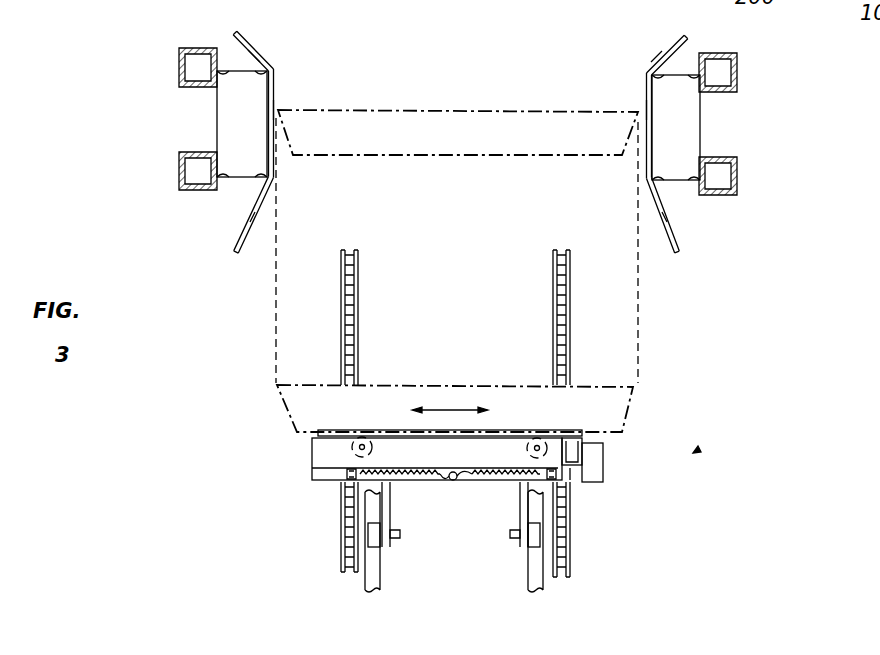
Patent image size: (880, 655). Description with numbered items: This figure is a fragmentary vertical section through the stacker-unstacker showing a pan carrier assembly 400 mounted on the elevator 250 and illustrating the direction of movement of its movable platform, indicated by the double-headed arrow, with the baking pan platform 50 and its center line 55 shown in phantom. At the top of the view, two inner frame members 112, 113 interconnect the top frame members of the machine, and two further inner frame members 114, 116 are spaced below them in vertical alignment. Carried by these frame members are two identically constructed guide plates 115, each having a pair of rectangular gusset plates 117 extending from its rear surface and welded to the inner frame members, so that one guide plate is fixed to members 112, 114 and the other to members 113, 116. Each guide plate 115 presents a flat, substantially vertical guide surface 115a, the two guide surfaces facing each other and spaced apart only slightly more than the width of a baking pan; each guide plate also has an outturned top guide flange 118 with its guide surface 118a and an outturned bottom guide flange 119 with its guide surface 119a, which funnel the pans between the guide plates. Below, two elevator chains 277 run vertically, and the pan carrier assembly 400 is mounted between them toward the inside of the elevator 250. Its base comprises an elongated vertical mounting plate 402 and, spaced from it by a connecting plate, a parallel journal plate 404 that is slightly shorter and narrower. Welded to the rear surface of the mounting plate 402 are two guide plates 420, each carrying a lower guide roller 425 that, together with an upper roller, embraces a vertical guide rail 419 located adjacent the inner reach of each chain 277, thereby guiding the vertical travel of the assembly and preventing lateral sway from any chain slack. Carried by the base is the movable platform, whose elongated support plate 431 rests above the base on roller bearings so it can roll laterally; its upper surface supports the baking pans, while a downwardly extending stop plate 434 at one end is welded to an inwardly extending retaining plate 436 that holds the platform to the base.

The platform 50 is at (570, 112).
The platform center line 55 is at (276, 297).
The inner frame member 112 is at (179, 64).
The inner frame member 113 is at (737, 68).
The inner frame member 114 is at (179, 172).
The inner frame member 116 is at (737, 178).
The guide plate 115 is at (274, 94).
The guide surface 115a is at (277, 103).
The gusset plate 117 is at (220, 119).
The top guide flange 118 is at (248, 42).
The guide surface 118a is at (265, 60).
The bottom guide flange 119 is at (240, 242).
The guide surface 119a is at (253, 218).
The chain 277 is at (358, 294).
The elevator 250 is at (693, 453).
The pan carrier assembly 400 is at (444, 503).
The mounting plate 402 is at (603, 472).
The journal plate 404 is at (310, 460).
The guide rail 419 is at (528, 585).
The guide plate 420 is at (520, 505).
The guide roller 425 is at (375, 547).
The support plate 431 is at (505, 433).
The stop plate 434 is at (582, 450).
The retaining plate 436 is at (570, 466).